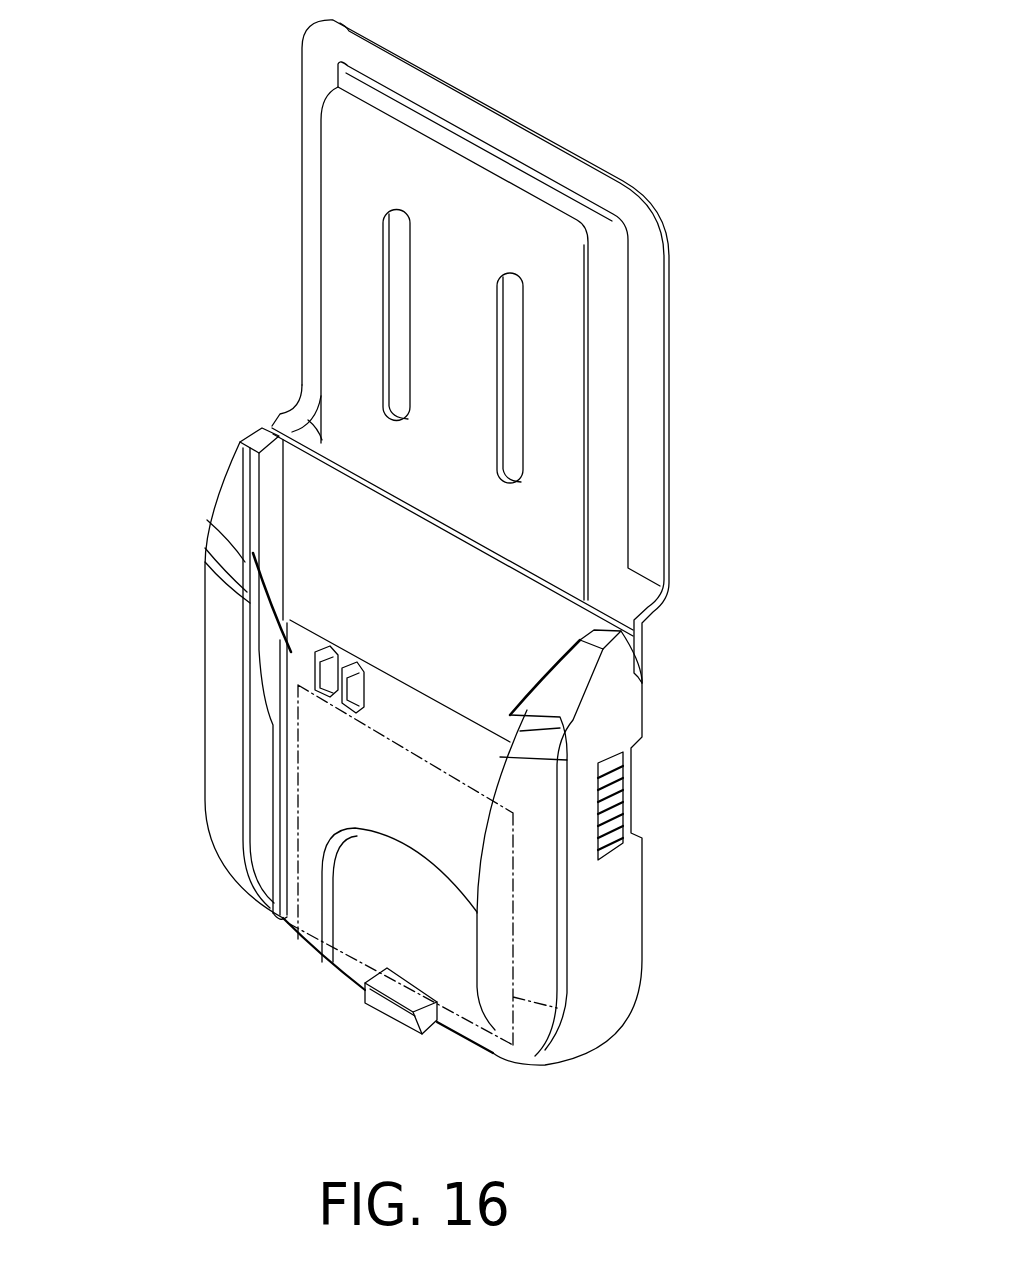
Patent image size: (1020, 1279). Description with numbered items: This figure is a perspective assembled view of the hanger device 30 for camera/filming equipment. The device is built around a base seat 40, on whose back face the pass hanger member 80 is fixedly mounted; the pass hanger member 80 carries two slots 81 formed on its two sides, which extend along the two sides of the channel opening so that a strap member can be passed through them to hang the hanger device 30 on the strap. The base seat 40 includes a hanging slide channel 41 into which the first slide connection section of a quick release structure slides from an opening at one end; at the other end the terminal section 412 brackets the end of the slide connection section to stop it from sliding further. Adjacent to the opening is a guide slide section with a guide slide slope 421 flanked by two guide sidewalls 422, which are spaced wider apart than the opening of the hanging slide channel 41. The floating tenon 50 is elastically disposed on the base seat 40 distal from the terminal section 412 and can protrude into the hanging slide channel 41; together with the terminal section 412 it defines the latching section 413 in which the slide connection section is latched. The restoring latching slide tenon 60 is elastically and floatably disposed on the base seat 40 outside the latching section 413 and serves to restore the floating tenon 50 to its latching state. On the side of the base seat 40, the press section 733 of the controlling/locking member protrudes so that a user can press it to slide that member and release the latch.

The hanger device 30 is at (174, 379).
The pass hanger member 80 is at (582, 152).
The slot 81 is at (321, 285).
The base seat 40 is at (240, 898).
The hanging slide channel 41 is at (300, 932).
The terminal section 412 is at (390, 1020).
The latching section 413 is at (405, 747).
The guide slide slope 421 is at (425, 569).
The guide sidewall 422 is at (270, 475).
The floating tenon 50 is at (330, 662).
The restoring latching slide tenon 60 is at (356, 666).
The press section 733 is at (628, 800).